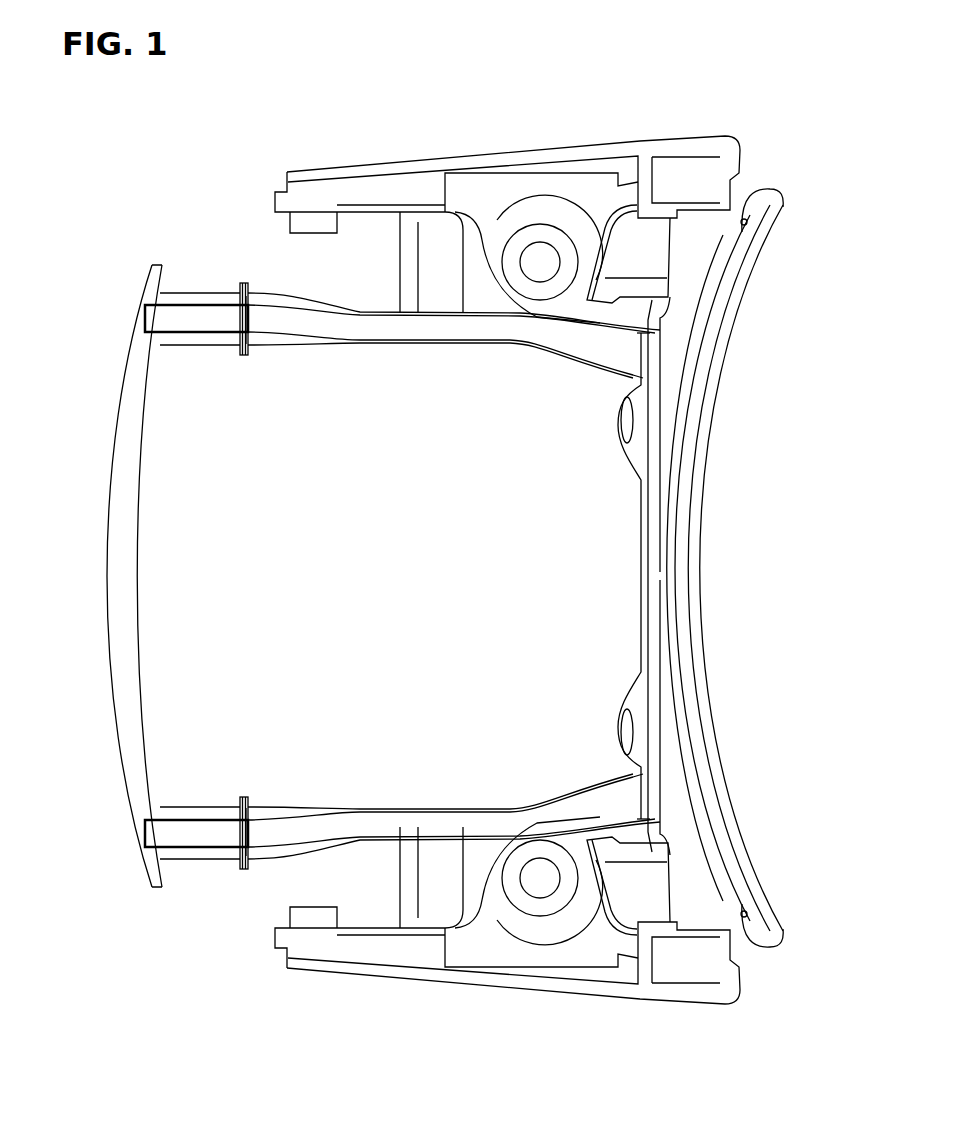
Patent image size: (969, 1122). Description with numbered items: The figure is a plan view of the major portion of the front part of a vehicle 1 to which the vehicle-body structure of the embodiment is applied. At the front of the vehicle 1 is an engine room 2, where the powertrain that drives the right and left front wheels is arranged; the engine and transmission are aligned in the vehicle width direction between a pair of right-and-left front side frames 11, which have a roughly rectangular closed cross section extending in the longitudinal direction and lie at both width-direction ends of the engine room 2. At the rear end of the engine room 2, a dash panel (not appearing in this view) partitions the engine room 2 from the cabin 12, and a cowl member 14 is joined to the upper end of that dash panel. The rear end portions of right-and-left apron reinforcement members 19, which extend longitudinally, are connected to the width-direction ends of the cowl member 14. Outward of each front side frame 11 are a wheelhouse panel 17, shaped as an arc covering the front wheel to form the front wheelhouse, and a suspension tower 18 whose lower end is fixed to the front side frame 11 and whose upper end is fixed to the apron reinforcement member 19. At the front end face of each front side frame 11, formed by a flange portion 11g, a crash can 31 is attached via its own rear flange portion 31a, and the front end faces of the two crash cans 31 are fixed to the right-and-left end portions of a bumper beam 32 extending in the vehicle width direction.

The vehicle 1 is at (614, 106).
The engine room 2 is at (540, 576).
The front side frame 11 is at (378, 328).
The flange portion 11g is at (250, 355).
The cabin 12 is at (771, 568).
The cowl member 14 is at (685, 432).
The wheelhouse panel 17 is at (435, 243).
The suspension tower 18 is at (515, 243).
The apron reinforcement member 19 is at (352, 193).
The crash can 31 is at (196, 317).
The flange portion 31a is at (240, 355).
The bumper beam 32 is at (118, 546).